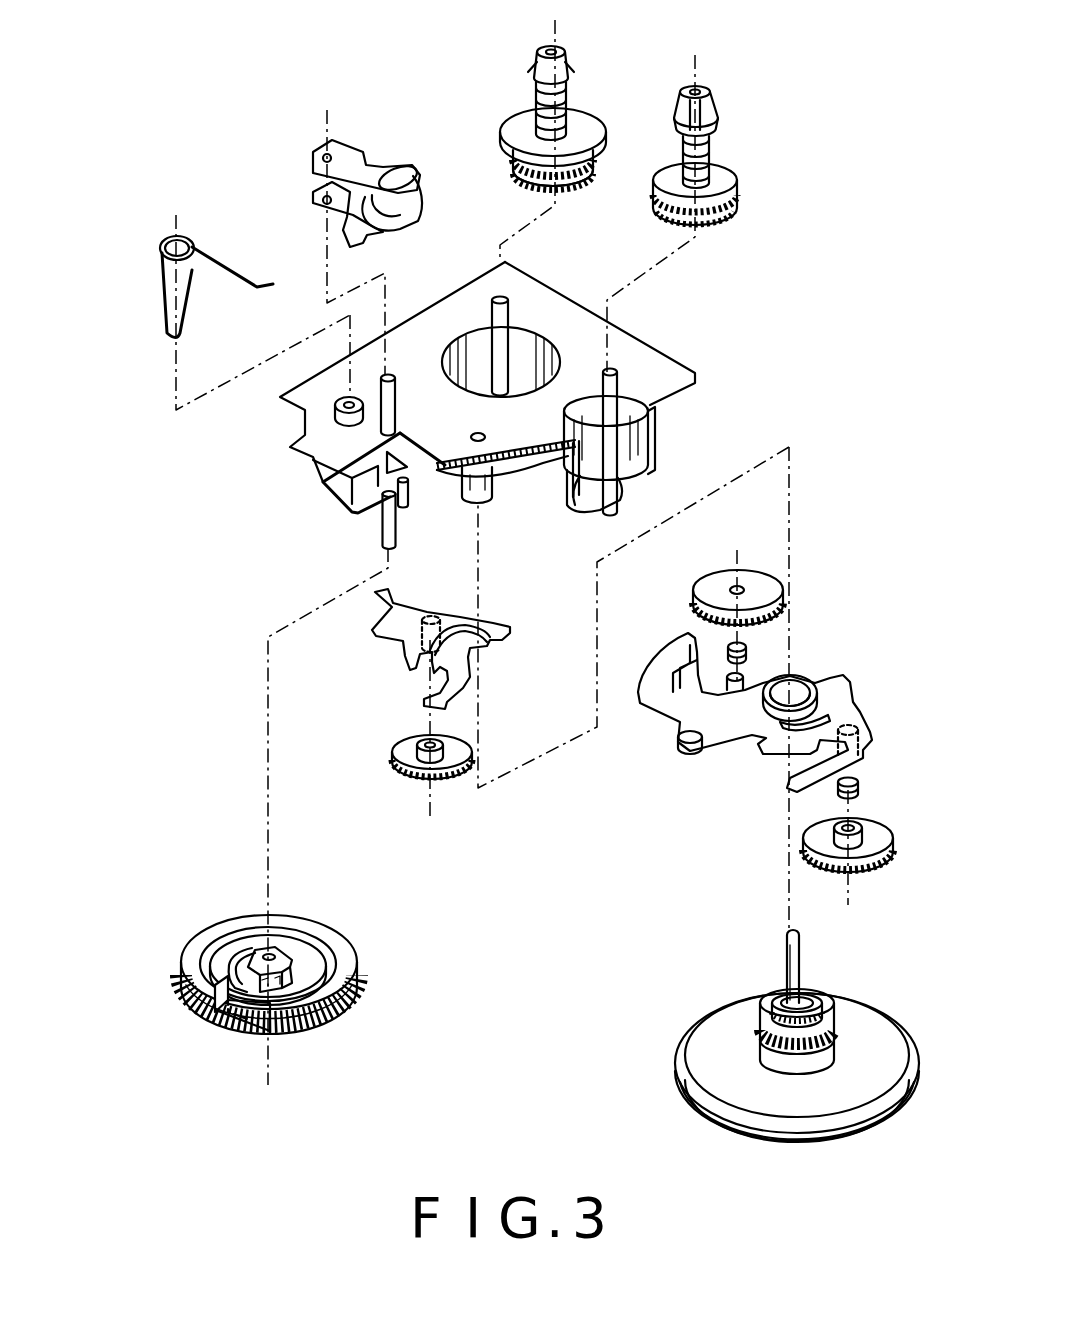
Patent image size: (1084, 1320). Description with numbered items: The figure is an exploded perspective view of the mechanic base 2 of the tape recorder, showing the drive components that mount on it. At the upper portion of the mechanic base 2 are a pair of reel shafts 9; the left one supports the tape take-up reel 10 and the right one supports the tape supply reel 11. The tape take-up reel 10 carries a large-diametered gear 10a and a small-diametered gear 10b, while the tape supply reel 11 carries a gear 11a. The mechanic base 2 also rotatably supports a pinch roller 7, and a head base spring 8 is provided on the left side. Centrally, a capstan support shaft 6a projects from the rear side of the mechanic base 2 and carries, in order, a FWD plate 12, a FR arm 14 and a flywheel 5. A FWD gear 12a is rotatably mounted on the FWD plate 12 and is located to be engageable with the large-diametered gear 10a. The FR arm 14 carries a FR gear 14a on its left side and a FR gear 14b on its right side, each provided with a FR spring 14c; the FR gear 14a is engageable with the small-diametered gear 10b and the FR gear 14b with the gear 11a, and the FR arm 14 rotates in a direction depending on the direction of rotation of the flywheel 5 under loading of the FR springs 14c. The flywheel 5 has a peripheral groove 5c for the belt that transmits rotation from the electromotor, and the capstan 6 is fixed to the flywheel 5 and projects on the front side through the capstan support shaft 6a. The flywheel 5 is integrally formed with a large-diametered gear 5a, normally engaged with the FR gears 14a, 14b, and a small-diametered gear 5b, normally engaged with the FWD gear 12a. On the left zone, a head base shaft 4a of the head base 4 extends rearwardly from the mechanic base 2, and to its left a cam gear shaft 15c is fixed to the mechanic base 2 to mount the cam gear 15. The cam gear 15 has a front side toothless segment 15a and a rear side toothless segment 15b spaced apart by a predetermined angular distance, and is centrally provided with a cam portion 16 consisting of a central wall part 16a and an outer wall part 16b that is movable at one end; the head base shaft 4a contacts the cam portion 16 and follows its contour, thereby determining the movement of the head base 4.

The mechanic base 2 is at (312, 455).
The head base 4 is at (362, 492).
The head base shaft 4a is at (407, 488).
The flywheel 5 is at (868, 1018).
The large-diametered gear 5a is at (762, 1020).
The small-diametered gear 5b is at (775, 1000).
The groove 5c is at (690, 1085).
The capstan 6 is at (787, 950).
The capstan support shaft 6a is at (482, 503).
The pinch roller 7 is at (392, 158).
The head base spring 8 is at (192, 243).
The reel shafts 9 is at (496, 300).
The tape take-up reel 10 is at (545, 58).
The large-diametered gear 10a is at (520, 130).
The small-diametered gear 10b is at (570, 182).
The tape supply reel 11 is at (720, 100).
The gear 11a is at (730, 185).
The FWD plate 12 is at (405, 652).
The FWD gear 12a is at (400, 755).
The FR arm 14 is at (758, 747).
The FR gear 14a is at (700, 596).
The FR gear 14b is at (895, 838).
The FR springs 14c is at (748, 647).
The cam gear 15 is at (320, 920).
The front side toothless segment 15a is at (245, 1028).
The rear side toothless segment 15b is at (355, 1010).
The cam gear shaft 15c is at (378, 527).
The cam portion 16 is at (238, 862).
The central wall part 16a is at (268, 952).
The outer wall part 16b is at (232, 955).